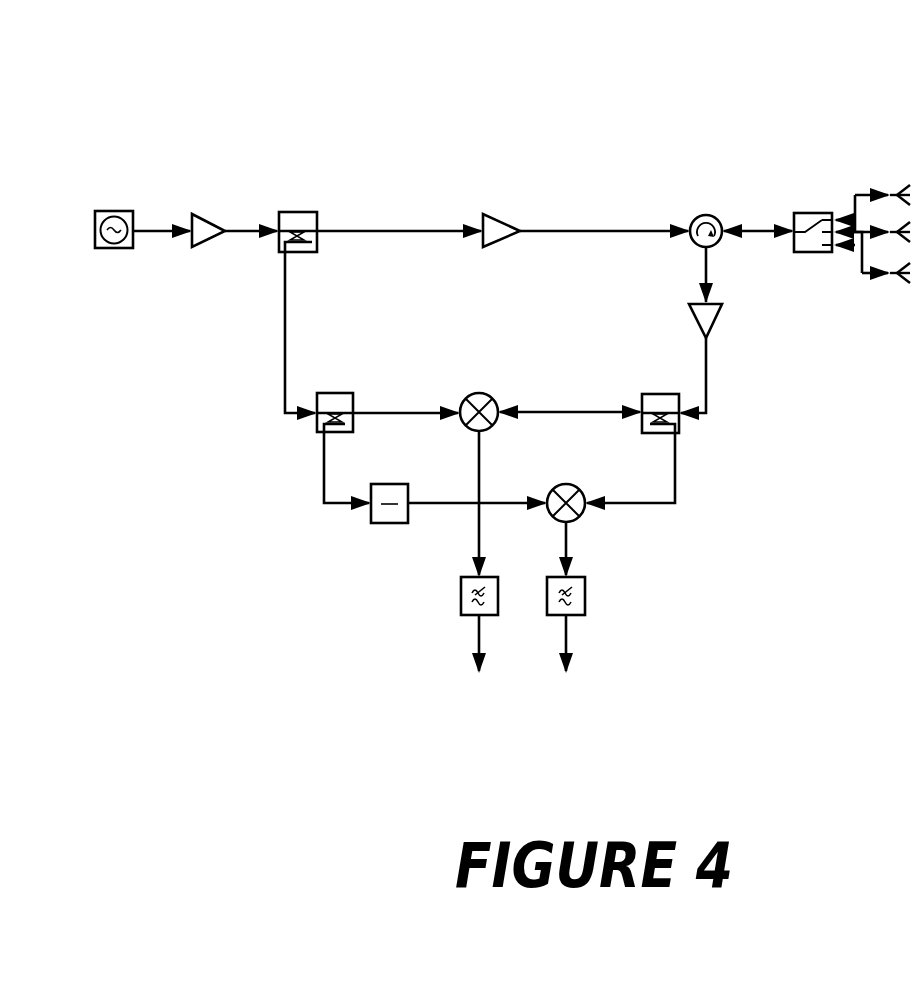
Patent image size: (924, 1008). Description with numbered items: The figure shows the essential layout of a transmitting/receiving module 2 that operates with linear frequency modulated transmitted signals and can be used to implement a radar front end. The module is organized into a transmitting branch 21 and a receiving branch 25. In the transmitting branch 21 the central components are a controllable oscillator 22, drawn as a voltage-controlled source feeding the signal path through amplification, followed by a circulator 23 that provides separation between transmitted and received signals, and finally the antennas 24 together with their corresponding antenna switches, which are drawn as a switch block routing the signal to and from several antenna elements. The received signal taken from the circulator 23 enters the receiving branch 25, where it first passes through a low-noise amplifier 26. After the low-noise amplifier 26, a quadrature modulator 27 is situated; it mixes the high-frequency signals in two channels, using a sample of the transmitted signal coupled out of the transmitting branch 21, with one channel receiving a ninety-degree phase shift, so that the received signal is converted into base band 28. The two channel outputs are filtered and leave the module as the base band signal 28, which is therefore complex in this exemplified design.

The transmitting/receiving module 2 is at (655, 102).
The transmitting branch 21 is at (564, 231).
The controllable oscillator 22 is at (117, 212).
The circulator 23 is at (710, 213).
The antennas 24 is at (857, 222).
The receiving branch 25 is at (708, 272).
The low-noise amplifier 26 is at (717, 323).
The quadrature modulator 27 is at (482, 393).
The base band 28 is at (566, 637).